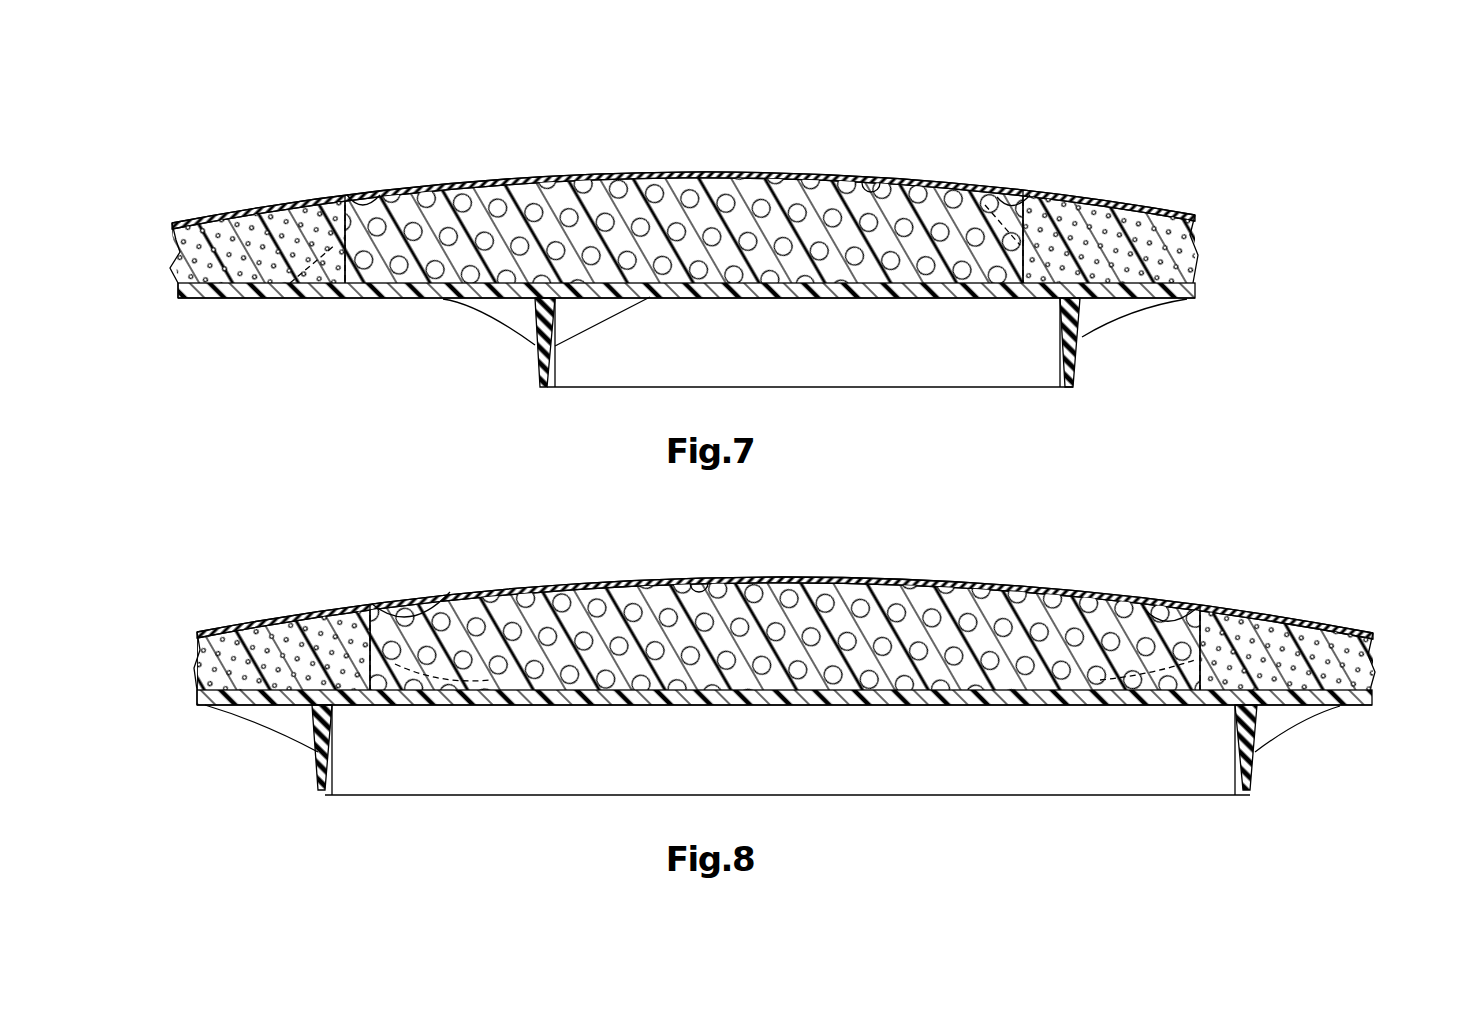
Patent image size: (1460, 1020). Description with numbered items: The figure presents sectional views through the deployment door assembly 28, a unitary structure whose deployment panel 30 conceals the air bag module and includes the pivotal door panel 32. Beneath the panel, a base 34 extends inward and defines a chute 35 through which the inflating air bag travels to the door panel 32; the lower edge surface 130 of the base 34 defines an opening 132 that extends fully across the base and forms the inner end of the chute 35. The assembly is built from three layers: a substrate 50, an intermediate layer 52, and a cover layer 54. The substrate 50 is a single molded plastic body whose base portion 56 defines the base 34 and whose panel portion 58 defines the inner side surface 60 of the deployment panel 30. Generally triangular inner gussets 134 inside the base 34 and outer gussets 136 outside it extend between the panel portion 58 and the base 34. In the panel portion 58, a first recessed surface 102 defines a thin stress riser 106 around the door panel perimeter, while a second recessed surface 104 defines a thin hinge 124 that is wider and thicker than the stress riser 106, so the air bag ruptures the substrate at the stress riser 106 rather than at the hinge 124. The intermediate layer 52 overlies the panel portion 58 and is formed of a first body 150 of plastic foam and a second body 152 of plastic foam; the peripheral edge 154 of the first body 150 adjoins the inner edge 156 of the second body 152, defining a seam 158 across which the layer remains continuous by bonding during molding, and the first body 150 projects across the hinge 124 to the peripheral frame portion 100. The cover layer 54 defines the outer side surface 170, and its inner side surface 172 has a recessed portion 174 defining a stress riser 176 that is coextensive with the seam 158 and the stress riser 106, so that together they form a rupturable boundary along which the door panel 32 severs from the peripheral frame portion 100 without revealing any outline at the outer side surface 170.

In FIG. 7, the deployment door assembly 28 is at (213, 78).
In FIG. 8, the deployment door assembly 28 is at (277, 530).
In FIG. 7, the deployment panel 30 is at (570, 172).
In FIG. 8, the deployment panel 30 is at (1378, 631).
In FIG. 7, the door panel 32 is at (678, 185).
In FIG. 8, the door panel 32 is at (859, 584).
In FIG. 7, the base 34 is at (770, 391).
In FIG. 8, the base 34 is at (1257, 774).
In FIG. 7, the chute 35 is at (772, 374).
In FIG. 8, the chute 35 is at (692, 765).
In FIG. 7, the substrate 50 is at (205, 302).
In FIG. 8, the substrate 50 is at (194, 702).
In FIG. 7, the intermediate layer 52 is at (171, 242).
In FIG. 8, the intermediate layer 52 is at (193, 662).
In FIG. 7, the cover layer 54 is at (317, 196).
In FIG. 8, the cover layer 54 is at (212, 622).
In FIG. 7, the base portion 56 is at (536, 380).
In FIG. 8, the base portion 56 is at (315, 787).
In FIG. 7, the panel portion 58 is at (818, 298).
In FIG. 8, the panel portion 58 is at (256, 696).
In FIG. 7, the inner side surface 60 is at (893, 300).
In FIG. 8, the inner side surface 60 is at (289, 706).
In FIG. 7, the peripheral frame portion 100 is at (269, 208).
In FIG. 8, the peripheral frame portion 100 is at (1326, 615).
In FIG. 7, the first recessed surface 102 is at (1022, 298).
In FIG. 8, the first recessed surface 102 is at (378, 706).
In FIG. 7, the second recessed surface 104 is at (622, 303).
In FIG. 7, the stress riser 106 is at (1024, 302).
In FIG. 8, the stress riser 106 is at (367, 709).
In FIG. 7, the hinge 124 is at (609, 302).
In FIG. 7, the lower edge surface 130 is at (855, 390).
In FIG. 8, the lower edge surface 130 is at (1248, 792).
In FIG. 7, the opening 132 is at (962, 391).
In FIG. 8, the opening 132 is at (1131, 795).
In FIG. 7, the inner gussets 134 is at (573, 320).
In FIG. 7, the outer gussets 136 is at (508, 310).
In FIG. 8, the outer gussets 136 is at (303, 728).
In FIG. 7, the first body of plastic foam 150 is at (747, 197).
In FIG. 8, the first body of plastic foam 150 is at (635, 605).
In FIG. 7, the second body of plastic foam 152 is at (234, 243).
In FIG. 8, the second body of plastic foam 152 is at (278, 646).
In FIG. 7, the peripheral edge 154 is at (1040, 195).
In FIG. 8, the peripheral edge 154 is at (340, 625).
In FIG. 7, the inner edge 156 is at (962, 185).
In FIG. 8, the inner edge 156 is at (475, 693).
In FIG. 7, the seam 158 is at (348, 230).
In FIG. 8, the seam 158 is at (358, 612).
In FIG. 7, the outer side surface 170 is at (880, 176).
In FIG. 8, the outer side surface 170 is at (783, 576).
In FIG. 7, the inner side surface 172 is at (866, 186).
In FIG. 8, the inner side surface 172 is at (698, 578).
In FIG. 7, the recessed portion 174 is at (377, 193).
In FIG. 8, the recessed portion 174 is at (360, 621).
In FIG. 7, the stress riser 176 is at (349, 192).
In FIG. 8, the stress riser 176 is at (374, 601).